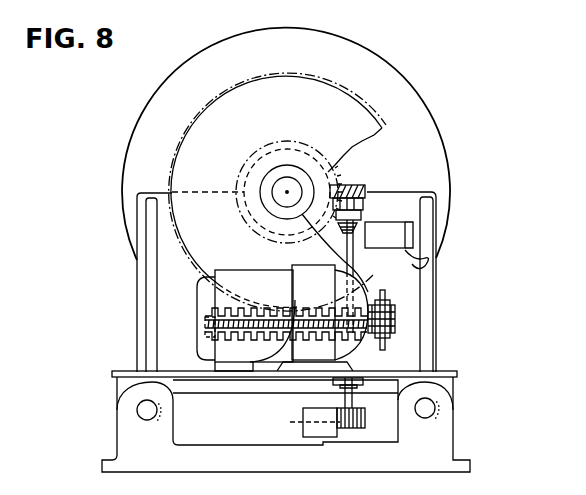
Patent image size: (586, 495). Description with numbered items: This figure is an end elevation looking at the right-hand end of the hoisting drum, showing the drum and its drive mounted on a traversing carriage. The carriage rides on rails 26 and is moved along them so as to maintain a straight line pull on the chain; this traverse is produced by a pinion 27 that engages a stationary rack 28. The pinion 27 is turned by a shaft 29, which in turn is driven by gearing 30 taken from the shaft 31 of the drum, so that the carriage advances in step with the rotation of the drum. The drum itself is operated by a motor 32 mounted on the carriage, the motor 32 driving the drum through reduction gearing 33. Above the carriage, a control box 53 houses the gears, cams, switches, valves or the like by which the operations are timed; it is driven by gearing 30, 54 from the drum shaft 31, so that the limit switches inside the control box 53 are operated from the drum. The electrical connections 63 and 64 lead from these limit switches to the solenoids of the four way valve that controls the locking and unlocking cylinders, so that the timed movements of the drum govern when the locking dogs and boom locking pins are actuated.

The rails 26 is at (135, 411).
The pinion 27 is at (366, 418).
The stationary rack 28 is at (303, 422).
The shaft 29 is at (338, 264).
The gearing 30 is at (341, 182).
The drum shaft 31 is at (286, 191).
The motor 32 is at (250, 283).
The reduction gearing 33 is at (210, 291).
The control box 53 is at (403, 236).
The gearing 54 is at (352, 219).
The electrical connections 63 is at (384, 252).
The electrical connections 64 is at (428, 264).